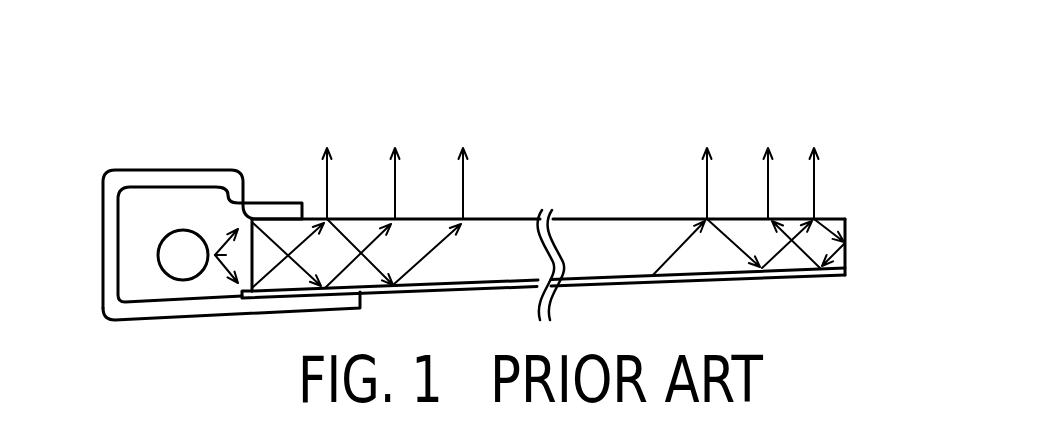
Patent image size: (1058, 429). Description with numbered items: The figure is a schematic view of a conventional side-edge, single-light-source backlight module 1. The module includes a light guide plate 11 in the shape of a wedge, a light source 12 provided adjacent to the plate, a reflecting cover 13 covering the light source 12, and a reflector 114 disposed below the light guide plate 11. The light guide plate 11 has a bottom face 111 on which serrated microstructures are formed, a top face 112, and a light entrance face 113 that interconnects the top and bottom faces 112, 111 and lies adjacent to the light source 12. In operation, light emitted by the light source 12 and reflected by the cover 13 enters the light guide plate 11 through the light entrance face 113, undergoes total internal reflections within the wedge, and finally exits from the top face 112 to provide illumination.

The backlight module 1 is at (697, 117).
The light guide plate 11 is at (589, 224).
The bottom face 111 is at (600, 280).
The top face 112 is at (600, 218).
The light entrance face 113 is at (255, 242).
The reflector 114 is at (845, 269).
The light source 12 is at (183, 255).
The reflecting cover 13 is at (172, 170).